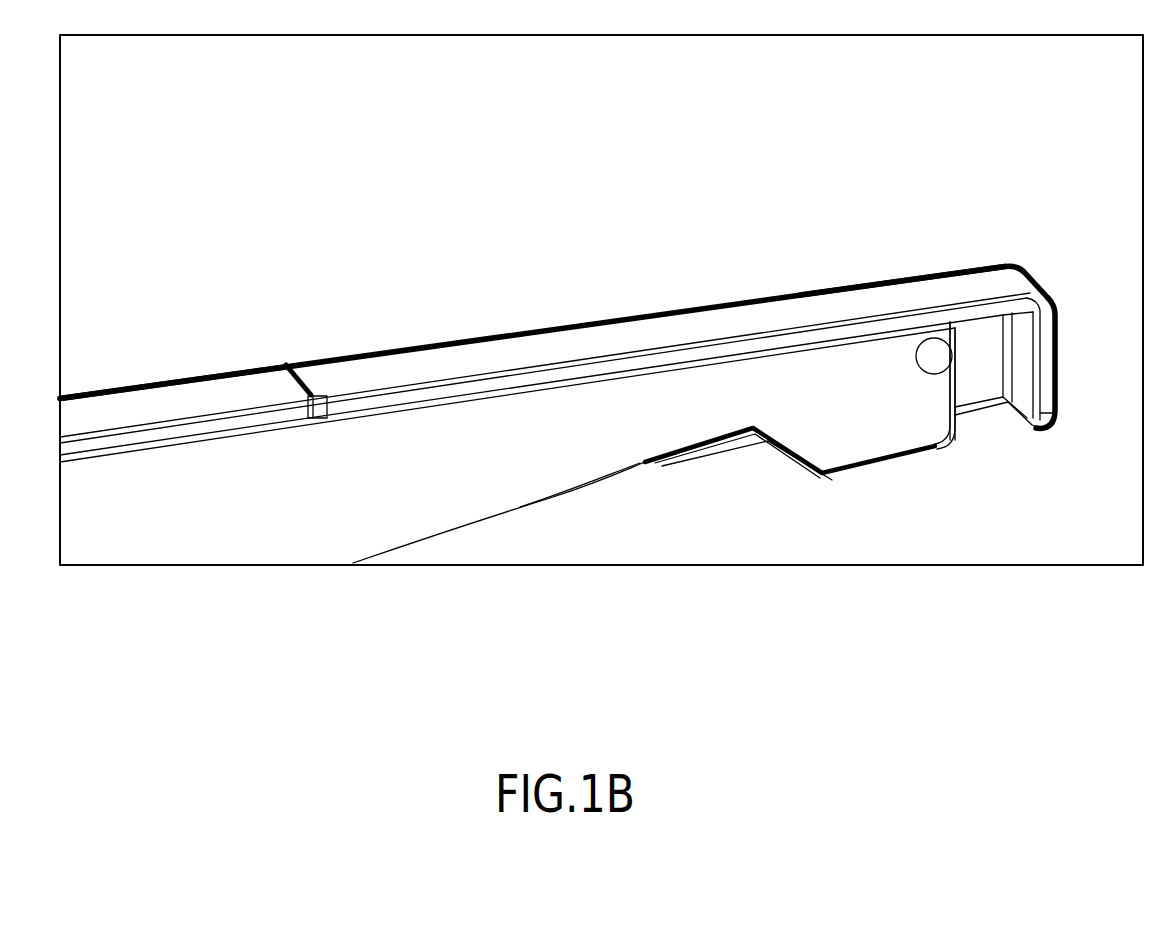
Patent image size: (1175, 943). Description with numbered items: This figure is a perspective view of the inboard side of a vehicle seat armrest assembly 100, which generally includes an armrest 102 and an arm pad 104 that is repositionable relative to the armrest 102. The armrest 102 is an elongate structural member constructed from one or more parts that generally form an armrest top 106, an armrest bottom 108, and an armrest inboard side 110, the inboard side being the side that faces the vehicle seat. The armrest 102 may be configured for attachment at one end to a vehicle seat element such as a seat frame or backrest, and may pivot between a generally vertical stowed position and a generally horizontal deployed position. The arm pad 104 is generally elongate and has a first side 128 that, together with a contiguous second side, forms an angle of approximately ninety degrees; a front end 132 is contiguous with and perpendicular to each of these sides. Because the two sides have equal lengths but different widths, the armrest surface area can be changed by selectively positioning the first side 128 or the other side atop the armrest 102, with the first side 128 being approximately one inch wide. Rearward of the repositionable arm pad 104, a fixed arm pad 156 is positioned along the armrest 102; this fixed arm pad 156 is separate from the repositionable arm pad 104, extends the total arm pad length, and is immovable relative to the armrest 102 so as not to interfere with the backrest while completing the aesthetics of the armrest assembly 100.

The armrest assembly 100 is at (912, 156).
The armrest 102 is at (440, 525).
The arm pad 104 is at (567, 337).
The armrest top 106 is at (411, 414).
The armrest bottom 108 is at (659, 466).
The armrest inboard side 110 is at (540, 482).
The first side 128 is at (843, 297).
The front end 132 is at (1047, 367).
The fixed arm pad 156 is at (197, 393).